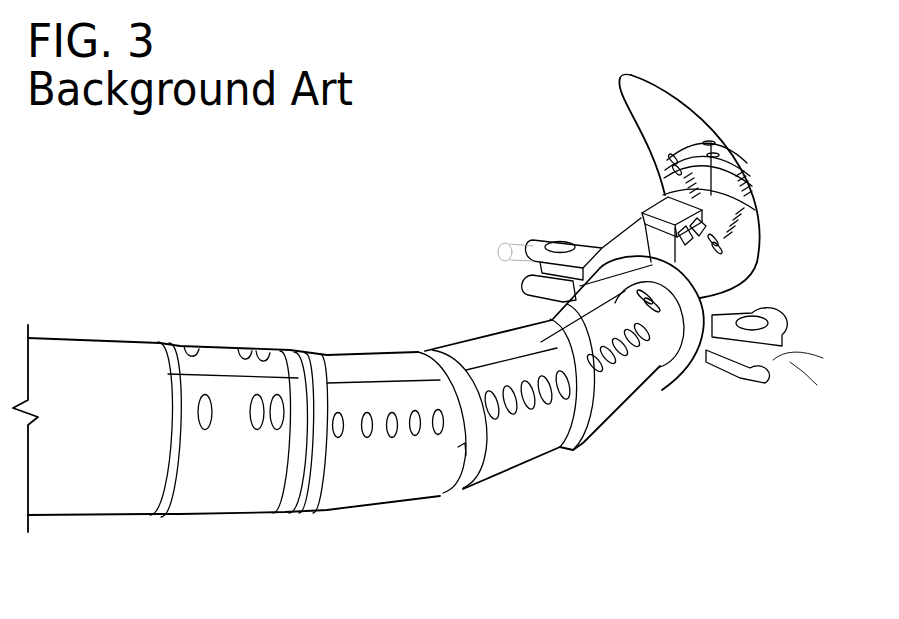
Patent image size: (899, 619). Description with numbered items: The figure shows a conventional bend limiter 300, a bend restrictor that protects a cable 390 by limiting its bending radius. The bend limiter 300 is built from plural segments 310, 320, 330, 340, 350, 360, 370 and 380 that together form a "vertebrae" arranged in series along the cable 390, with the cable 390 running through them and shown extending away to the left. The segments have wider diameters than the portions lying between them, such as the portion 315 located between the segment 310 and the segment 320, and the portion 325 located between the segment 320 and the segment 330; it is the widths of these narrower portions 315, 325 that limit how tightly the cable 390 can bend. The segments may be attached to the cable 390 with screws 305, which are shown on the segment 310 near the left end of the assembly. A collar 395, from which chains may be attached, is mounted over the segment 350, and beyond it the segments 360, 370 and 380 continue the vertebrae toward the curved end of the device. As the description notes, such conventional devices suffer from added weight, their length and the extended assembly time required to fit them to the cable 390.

The bend limiter 300 is at (410, 227).
The screws 305 is at (252, 405).
The segment 310 is at (215, 505).
The portion 315 is at (282, 497).
The segment 320 is at (370, 490).
The portion 325 is at (458, 447).
The segment 330 is at (518, 443).
The segment 340 is at (613, 405).
The segment 350 is at (660, 368).
The segment 360 is at (740, 245).
The segment 370 is at (753, 202).
The segment 380 is at (737, 160).
The cable 390 is at (92, 500).
The collar 395 is at (720, 290).